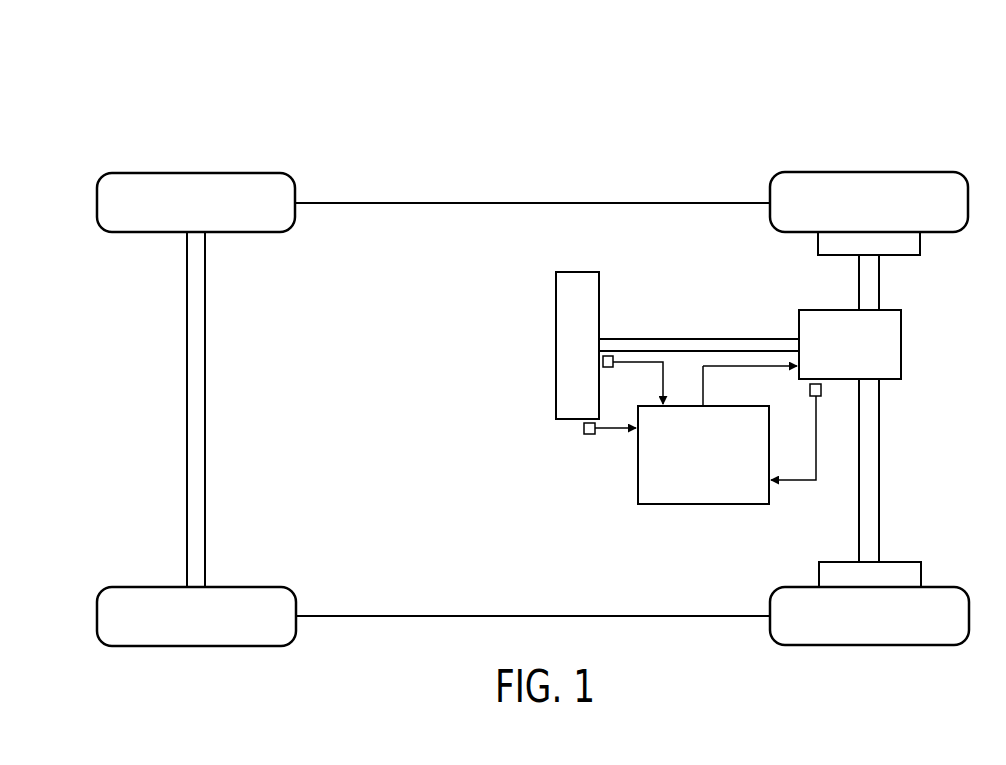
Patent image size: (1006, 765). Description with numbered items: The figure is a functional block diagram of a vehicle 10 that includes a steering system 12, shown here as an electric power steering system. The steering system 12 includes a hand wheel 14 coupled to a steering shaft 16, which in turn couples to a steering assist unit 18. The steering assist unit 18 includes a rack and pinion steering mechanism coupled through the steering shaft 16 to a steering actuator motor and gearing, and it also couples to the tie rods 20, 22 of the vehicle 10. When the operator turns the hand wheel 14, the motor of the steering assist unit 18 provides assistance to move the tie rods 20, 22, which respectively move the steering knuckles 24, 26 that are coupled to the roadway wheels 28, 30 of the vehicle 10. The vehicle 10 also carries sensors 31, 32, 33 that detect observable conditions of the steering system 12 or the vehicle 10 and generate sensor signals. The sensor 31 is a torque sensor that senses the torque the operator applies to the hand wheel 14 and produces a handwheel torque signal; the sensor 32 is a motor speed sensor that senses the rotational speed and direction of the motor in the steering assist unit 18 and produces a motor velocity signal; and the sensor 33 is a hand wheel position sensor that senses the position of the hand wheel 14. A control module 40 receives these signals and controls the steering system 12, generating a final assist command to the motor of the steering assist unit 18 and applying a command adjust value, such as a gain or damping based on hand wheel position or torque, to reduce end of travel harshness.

The vehicle 10 is at (118, 106).
The steering system 12 is at (664, 280).
The hand wheel 14 is at (575, 282).
The steering shaft 16 is at (703, 346).
The steering assist unit 18 is at (885, 351).
The tie rod 20 is at (870, 291).
The tie rod 22 is at (868, 462).
The steering knuckle 24 is at (905, 240).
The steering knuckle 26 is at (905, 576).
The roadway wheel 28 is at (950, 203).
The roadway wheel 30 is at (950, 623).
The torque sensor 31 is at (607, 369).
The motor speed sensor 32 is at (810, 389).
The hand wheel position sensor 33 is at (590, 437).
The control module 40 is at (703, 487).